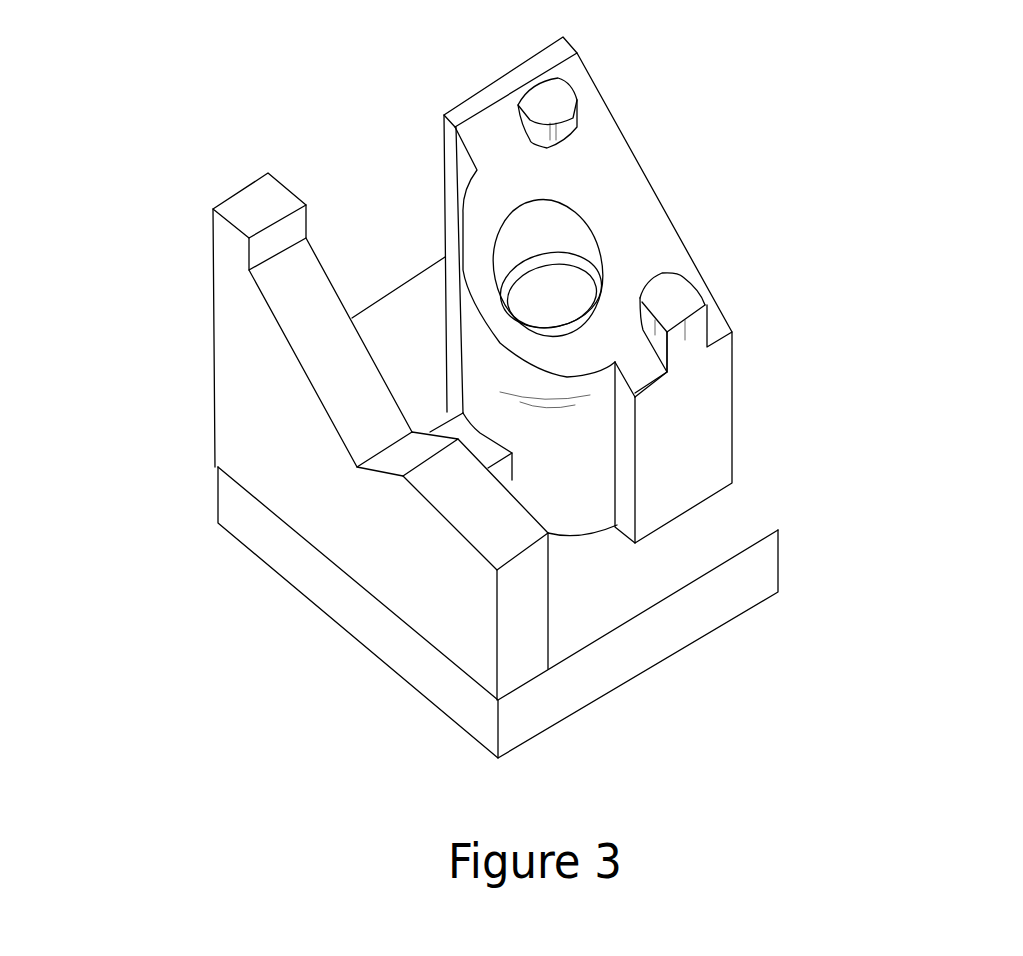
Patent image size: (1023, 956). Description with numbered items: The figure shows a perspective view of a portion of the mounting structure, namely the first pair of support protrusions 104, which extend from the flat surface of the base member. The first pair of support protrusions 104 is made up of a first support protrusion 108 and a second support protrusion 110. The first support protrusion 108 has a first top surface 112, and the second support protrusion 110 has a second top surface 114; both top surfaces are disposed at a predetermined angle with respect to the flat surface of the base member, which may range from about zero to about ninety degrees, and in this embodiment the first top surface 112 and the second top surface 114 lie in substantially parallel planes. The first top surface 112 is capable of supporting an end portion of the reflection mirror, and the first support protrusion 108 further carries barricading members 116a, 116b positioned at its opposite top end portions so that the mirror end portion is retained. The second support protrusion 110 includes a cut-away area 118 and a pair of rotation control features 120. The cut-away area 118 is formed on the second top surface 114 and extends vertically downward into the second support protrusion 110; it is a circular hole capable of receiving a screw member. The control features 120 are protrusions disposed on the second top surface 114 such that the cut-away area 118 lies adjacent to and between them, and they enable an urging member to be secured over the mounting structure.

The first pair of support protrusions 104 is at (817, 105).
The first support protrusion 108 is at (515, 658).
The second support protrusion 110 is at (718, 443).
The first top surface 112 is at (297, 305).
The second top surface 114 is at (613, 167).
The barricading member 116a is at (252, 205).
The barricading member 116b is at (553, 535).
The cut-away area 118 is at (523, 287).
The rotation control features 120 is at (550, 105).